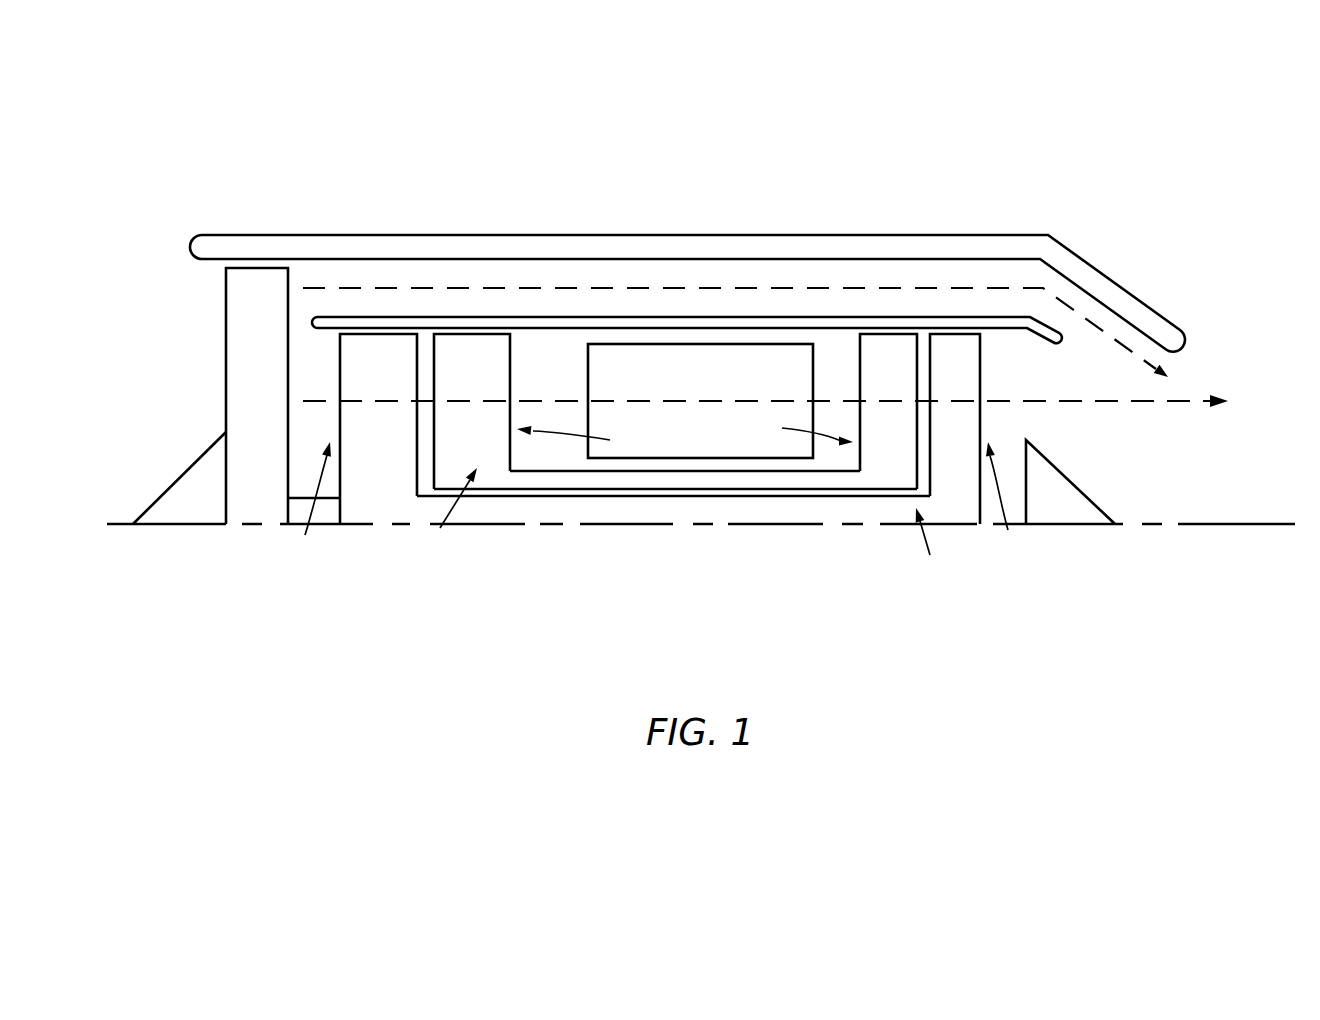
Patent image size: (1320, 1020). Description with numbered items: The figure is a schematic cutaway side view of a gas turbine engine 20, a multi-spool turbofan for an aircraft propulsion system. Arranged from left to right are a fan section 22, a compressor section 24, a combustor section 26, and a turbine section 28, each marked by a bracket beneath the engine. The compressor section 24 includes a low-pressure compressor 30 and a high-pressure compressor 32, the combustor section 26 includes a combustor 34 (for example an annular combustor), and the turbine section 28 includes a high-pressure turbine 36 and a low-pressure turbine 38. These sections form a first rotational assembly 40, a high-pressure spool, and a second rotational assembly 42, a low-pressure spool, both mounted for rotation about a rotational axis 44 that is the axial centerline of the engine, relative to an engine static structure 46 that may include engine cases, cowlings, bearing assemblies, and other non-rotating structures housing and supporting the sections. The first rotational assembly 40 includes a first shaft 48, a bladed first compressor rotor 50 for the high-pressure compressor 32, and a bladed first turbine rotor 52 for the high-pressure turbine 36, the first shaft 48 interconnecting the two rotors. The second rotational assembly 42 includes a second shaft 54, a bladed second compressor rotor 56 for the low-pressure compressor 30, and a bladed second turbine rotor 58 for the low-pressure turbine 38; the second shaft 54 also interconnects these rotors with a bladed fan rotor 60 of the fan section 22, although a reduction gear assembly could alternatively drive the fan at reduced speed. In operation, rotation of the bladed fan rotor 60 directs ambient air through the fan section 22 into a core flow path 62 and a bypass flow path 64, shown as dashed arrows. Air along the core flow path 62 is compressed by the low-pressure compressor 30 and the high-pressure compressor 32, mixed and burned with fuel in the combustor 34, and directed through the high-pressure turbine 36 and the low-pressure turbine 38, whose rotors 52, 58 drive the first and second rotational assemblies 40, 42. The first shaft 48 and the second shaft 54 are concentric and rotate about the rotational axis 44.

The gas turbine engine 20 is at (1068, 170).
The fan section 22 is at (298, 600).
The compressor section 24 is at (337, 600).
The combustor section 26 is at (587, 600).
The turbine section 28 is at (978, 600).
The low-pressure compressor 30 is at (305, 535).
The high-pressure compressor 32 is at (578, 440).
The combustor 34 is at (717, 382).
The high-pressure turbine 36 is at (800, 432).
The low-pressure turbine 38 is at (1008, 530).
The first rotational assembly 40 is at (440, 528).
The second rotational assembly 42 is at (930, 555).
The rotational axis 44 is at (1275, 524).
The engine static structure 46 is at (792, 318).
The first shaft 48 is at (605, 478).
The bladed first compressor rotor 50 is at (457, 381).
The bladed first turbine rotor 52 is at (875, 381).
The second shaft 54 is at (712, 506).
The bladed second compressor rotor 56 is at (392, 381).
The bladed second turbine rotor 58 is at (970, 381).
The bladed fan rotor 60 is at (267, 381).
The core flow path 62 is at (1125, 401).
The bypass flow path 64 is at (478, 287).